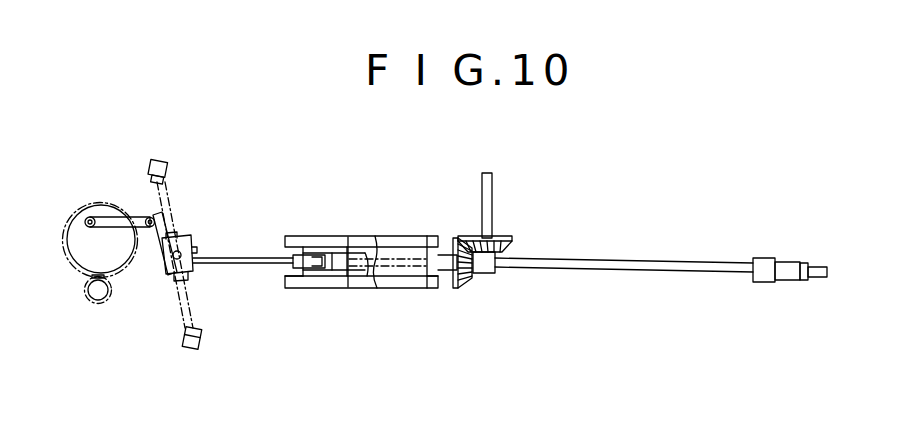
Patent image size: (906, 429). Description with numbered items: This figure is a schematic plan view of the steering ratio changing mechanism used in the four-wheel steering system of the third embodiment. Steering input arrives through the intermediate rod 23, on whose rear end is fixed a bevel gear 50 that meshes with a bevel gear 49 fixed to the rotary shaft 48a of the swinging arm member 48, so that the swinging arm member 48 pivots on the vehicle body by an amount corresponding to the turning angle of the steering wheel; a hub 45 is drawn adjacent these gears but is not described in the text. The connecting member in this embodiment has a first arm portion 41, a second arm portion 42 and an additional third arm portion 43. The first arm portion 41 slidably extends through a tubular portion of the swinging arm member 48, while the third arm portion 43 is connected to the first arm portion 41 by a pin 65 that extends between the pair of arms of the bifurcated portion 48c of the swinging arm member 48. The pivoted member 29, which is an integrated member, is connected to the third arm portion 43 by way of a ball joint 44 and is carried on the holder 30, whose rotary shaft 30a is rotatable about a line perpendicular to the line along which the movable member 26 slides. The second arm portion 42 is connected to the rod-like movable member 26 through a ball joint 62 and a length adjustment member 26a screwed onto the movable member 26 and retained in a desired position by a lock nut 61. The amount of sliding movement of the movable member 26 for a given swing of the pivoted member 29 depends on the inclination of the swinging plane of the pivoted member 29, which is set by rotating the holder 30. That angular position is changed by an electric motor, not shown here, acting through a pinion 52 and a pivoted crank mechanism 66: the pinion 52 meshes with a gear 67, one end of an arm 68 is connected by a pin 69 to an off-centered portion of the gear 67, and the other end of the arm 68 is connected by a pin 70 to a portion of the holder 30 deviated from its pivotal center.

The intermediate rod 23 is at (492, 210).
The movable member 26 is at (811, 280).
The length adjustment member 26a is at (779, 281).
The pivoted member 29 is at (173, 205).
The holder 30 is at (167, 283).
The rotary shaft 30a is at (190, 235).
The first arm portion 41 is at (347, 238).
The second arm portion 42 is at (628, 269).
The third arm portion 43 is at (245, 265).
The ball joint 44 is at (168, 171).
The hub 45 is at (498, 271).
The swinging arm member 48 is at (368, 235).
The rotary shaft 48a is at (447, 290).
The bifurcated portion 48c is at (299, 288).
The bevel gear 49 is at (466, 285).
The bevel gear 50 is at (505, 241).
The pinion 52 is at (105, 302).
The lock nut 61 is at (804, 262).
The ball joint 62 is at (755, 259).
The pin 65 is at (321, 272).
The pivoted crank mechanism 66 is at (120, 177).
The gear 67 is at (83, 210).
The arm 68 is at (122, 213).
The pin 69 is at (93, 216).
The pin 70 is at (151, 232).